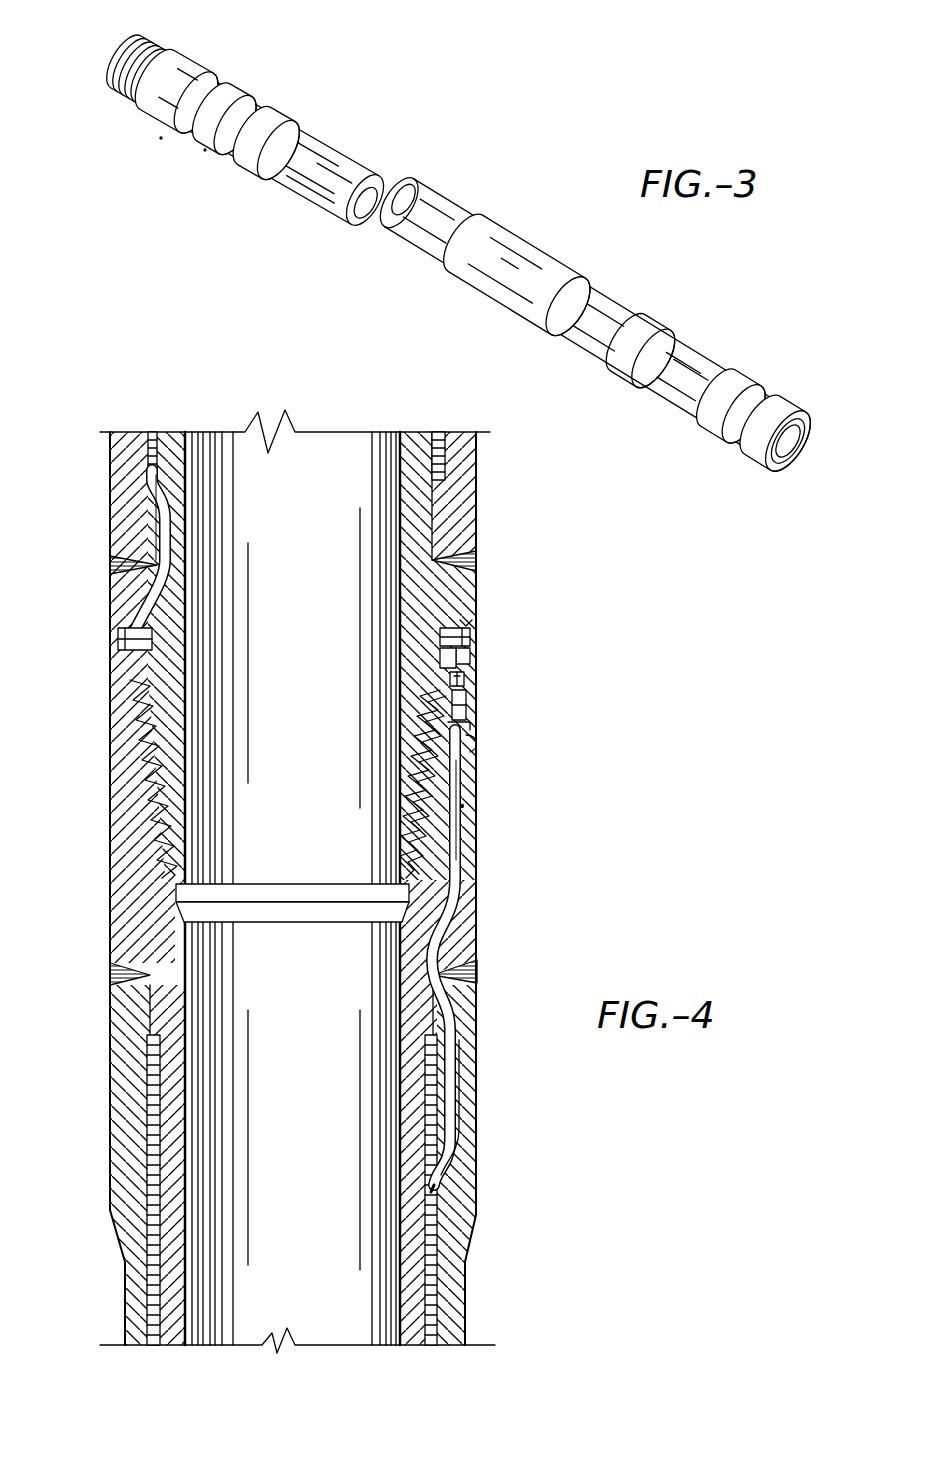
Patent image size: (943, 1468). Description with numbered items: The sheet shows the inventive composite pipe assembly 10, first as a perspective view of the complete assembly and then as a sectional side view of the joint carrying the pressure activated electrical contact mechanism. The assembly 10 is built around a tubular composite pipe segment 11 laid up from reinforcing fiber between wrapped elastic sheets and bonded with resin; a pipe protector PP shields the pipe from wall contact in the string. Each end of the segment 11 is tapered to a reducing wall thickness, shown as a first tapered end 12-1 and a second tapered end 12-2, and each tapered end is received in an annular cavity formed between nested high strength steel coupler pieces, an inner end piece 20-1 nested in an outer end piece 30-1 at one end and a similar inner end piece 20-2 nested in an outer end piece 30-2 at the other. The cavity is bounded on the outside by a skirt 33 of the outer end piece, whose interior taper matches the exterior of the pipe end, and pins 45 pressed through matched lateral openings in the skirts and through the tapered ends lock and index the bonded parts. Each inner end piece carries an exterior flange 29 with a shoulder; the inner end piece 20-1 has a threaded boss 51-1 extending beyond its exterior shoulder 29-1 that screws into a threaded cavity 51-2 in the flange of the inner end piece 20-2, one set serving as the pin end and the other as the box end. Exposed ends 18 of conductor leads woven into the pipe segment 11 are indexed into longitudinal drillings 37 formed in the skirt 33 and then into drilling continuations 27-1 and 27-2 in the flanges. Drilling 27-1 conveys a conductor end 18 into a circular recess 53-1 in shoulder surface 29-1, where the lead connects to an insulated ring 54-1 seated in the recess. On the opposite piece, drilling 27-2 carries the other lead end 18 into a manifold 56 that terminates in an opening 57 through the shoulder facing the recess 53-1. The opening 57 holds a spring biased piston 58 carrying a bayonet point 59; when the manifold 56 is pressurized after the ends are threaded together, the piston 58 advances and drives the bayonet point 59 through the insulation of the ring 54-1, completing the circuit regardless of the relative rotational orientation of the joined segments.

In FIG. 3, the pipe assembly 10 is at (410, 187).
In FIG. 3, the tubular composite pipe segment 11 is at (333, 199).
In FIG. 3, the pipe protector PP is at (549, 272).
In FIG. 3, the exterior flange 29 is at (196, 60).
In FIG. 4, the exterior shoulder 29-1 is at (470, 652).
In FIG. 3, the threaded boss 51-1 is at (134, 101).
In FIG. 4, the threaded boss 51-1 is at (470, 720).
In FIG. 4, the threaded cavity 51-2 is at (462, 806).
In FIG. 3, the inner end piece 20-1 is at (161, 138).
In FIG. 3, the inner end piece 20-2 is at (754, 455).
In FIG. 3, the outer end piece 30-1 is at (205, 151).
In FIG. 4, the outer end piece 30-1 is at (463, 532).
In FIG. 3, the outer end piece 30-2 is at (745, 387).
In FIG. 3, the pin 45 is at (254, 107).
In FIG. 3, the skirt 33 is at (284, 121).
In FIG. 4, the skirt 33 is at (472, 1170).
In FIG. 4, the first tapered end 12-1 is at (436, 466).
In FIG. 4, the second tapered end 12-2 is at (431, 1272).
In FIG. 4, the drilling 27-1 is at (170, 497).
In FIG. 4, the drilling 27-2 is at (452, 850).
In FIG. 4, the exposed end of conductor lead 18 is at (160, 527).
In FIG. 4, the insulated ring 54-1 is at (118, 640).
In FIG. 4, the circular recess 53-1 is at (464, 634).
In FIG. 4, the opening 57 is at (470, 657).
In FIG. 4, the spring biased piston 58 is at (468, 690).
In FIG. 4, the bayonet point 59 is at (456, 680).
In FIG. 4, the manifold 56 is at (478, 742).
In FIG. 4, the longitudinal drilling 37 is at (458, 1065).